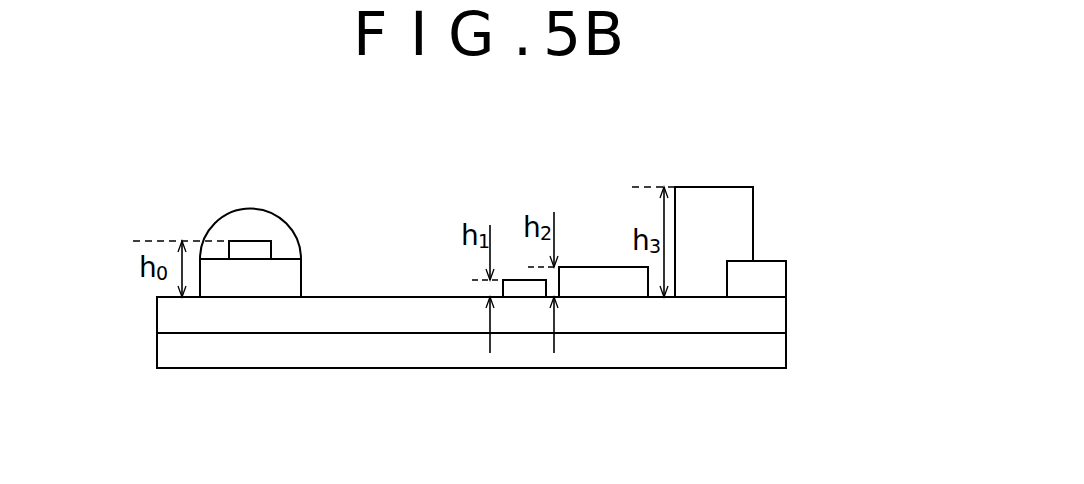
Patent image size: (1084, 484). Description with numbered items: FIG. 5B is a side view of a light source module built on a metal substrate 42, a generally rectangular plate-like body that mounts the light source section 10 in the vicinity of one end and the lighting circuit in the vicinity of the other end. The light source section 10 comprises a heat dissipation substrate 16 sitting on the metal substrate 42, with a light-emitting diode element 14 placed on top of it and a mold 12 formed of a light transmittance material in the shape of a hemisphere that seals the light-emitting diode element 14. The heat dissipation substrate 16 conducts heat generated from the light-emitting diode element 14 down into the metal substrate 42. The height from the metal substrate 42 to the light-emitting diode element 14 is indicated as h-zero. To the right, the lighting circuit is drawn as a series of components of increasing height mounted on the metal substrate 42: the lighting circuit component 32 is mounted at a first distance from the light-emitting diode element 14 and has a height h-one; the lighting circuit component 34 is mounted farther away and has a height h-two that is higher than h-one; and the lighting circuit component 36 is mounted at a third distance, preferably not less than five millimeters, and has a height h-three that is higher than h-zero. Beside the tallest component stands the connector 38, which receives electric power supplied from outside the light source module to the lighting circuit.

The light source section 10 is at (319, 234).
The mold 12 is at (260, 216).
The light-emitting diode element 14 is at (252, 247).
The heat dissipation substrate 16 is at (273, 278).
The lighting circuit component 32 is at (527, 290).
The lighting circuit component 34 is at (603, 287).
The lighting circuit component 36 is at (730, 213).
The connector 38 is at (773, 278).
The metal substrate 42 is at (778, 315).